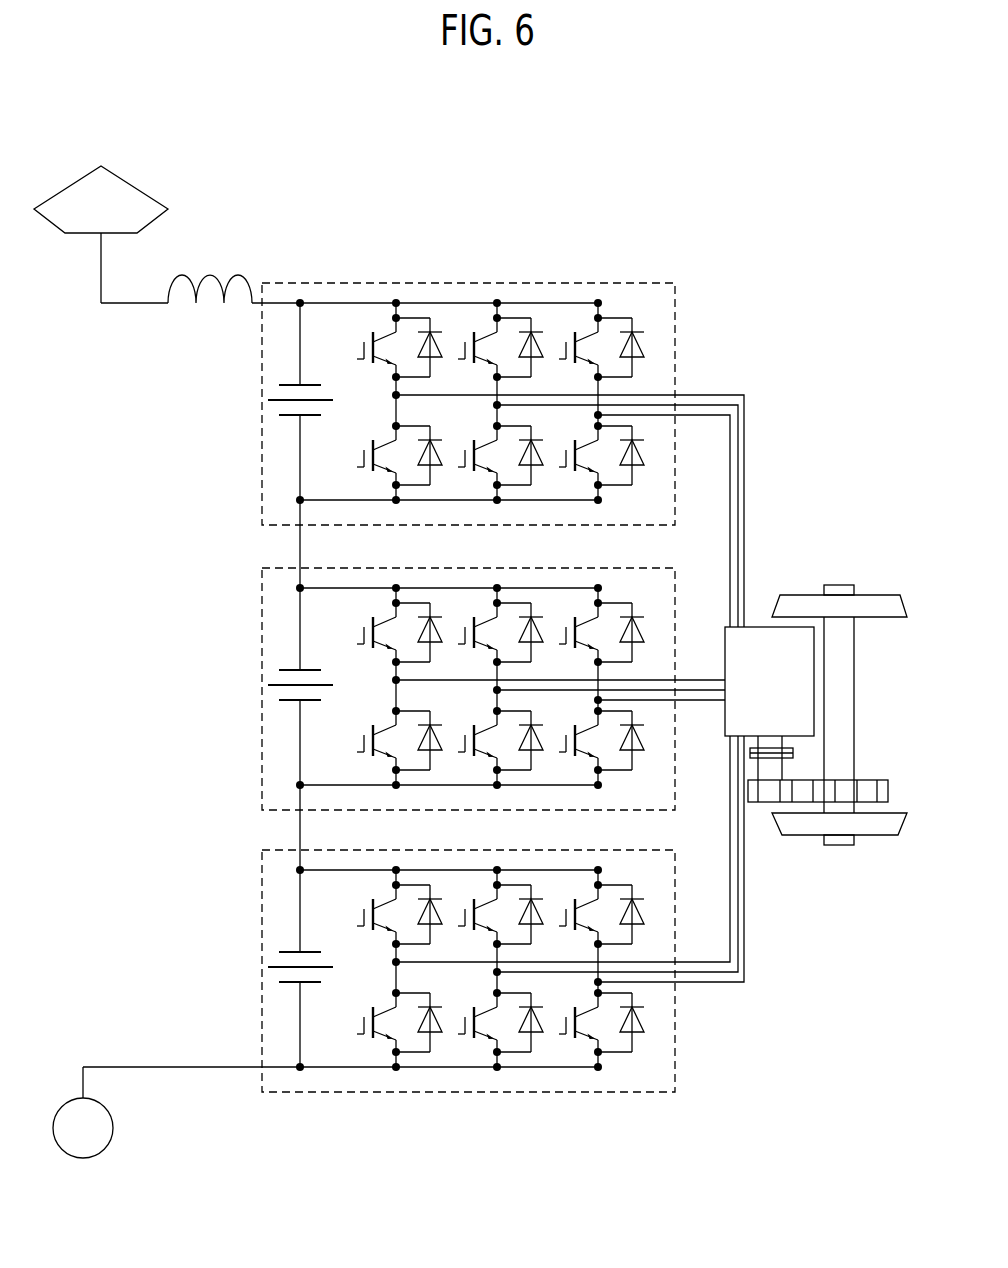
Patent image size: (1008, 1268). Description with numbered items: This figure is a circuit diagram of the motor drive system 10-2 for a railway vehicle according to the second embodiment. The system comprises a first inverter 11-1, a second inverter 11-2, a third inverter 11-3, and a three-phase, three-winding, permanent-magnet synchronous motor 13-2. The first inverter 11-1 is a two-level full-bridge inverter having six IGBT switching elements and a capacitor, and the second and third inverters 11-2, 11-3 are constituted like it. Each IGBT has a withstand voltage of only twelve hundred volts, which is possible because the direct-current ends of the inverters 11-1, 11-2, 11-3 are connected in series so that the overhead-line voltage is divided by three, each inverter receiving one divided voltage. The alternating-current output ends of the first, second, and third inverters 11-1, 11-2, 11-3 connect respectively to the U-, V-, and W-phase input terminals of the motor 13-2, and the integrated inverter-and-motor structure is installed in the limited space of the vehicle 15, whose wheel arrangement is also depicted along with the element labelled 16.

The motor drive system 10-2 is at (513, 248).
The first inverter 11-1 is at (260, 407).
The second inverter 11-2 is at (259, 598).
The third inverter 11-3 is at (257, 913).
The motor 13-2 is at (806, 714).
The vehicle 15 is at (815, 590).
The wheel 16 is at (814, 822).